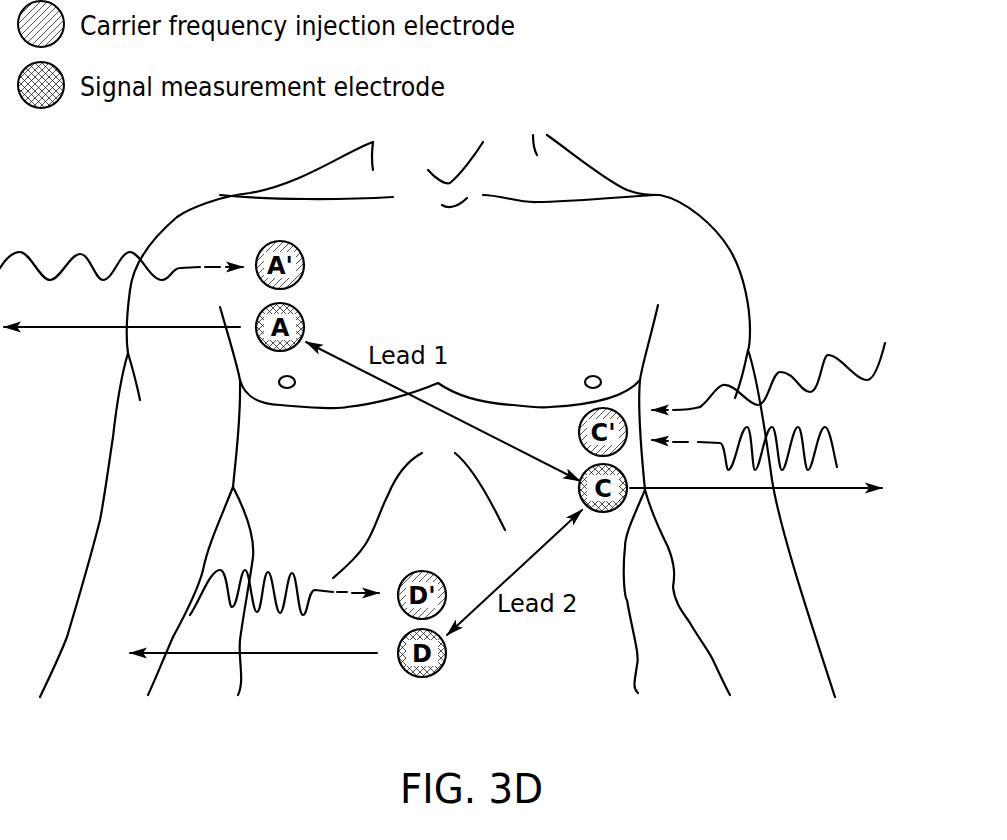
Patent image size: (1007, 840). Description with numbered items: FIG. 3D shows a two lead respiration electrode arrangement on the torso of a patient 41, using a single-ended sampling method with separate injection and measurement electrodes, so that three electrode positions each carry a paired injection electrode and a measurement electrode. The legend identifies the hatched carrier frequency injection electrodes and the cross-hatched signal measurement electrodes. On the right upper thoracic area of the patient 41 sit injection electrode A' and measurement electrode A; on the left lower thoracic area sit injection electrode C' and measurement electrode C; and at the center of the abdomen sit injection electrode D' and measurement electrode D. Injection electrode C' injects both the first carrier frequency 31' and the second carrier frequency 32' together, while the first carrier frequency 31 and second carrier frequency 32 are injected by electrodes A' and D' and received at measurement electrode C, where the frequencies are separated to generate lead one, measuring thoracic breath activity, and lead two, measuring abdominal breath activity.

The first carrier frequency 31 is at (121, 237).
The first carrier frequency 31' is at (768, 353).
The second carrier frequency 32 is at (778, 448).
The second carrier frequency 32' is at (284, 564).
The patient 41 is at (692, 223).